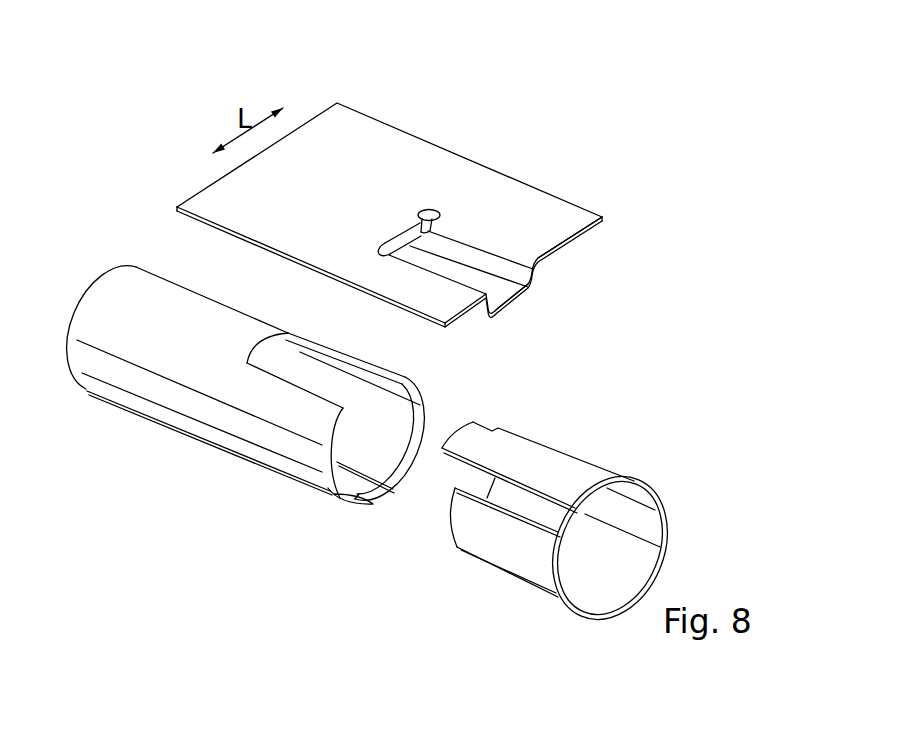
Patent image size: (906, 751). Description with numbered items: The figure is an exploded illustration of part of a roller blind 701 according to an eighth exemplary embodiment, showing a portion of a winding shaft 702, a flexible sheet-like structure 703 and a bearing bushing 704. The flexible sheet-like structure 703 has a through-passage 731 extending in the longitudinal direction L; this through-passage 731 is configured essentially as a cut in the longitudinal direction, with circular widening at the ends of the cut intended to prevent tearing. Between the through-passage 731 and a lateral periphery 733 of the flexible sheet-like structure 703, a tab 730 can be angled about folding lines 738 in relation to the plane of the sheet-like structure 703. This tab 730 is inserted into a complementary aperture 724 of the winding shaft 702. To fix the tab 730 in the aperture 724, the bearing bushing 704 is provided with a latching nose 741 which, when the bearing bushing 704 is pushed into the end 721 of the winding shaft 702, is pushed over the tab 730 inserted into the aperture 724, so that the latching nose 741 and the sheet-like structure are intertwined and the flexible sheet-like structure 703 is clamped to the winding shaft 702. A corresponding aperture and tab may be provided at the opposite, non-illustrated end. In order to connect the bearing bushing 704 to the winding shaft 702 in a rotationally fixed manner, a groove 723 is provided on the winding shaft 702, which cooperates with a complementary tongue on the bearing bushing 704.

The roller blind 701 is at (143, 153).
The winding shaft 702 is at (232, 490).
The flexible sheet-like structure 703 is at (560, 100).
The bearing bushing 704 is at (618, 428).
The end of the winding shaft 721 is at (328, 500).
The groove 723 is at (387, 492).
The aperture 724 is at (367, 387).
The tab 730 is at (482, 276).
The through-passage 731 is at (428, 210).
The lateral periphery 733 is at (598, 237).
The folding lines 738 is at (467, 238).
The latching nose 741 is at (532, 450).